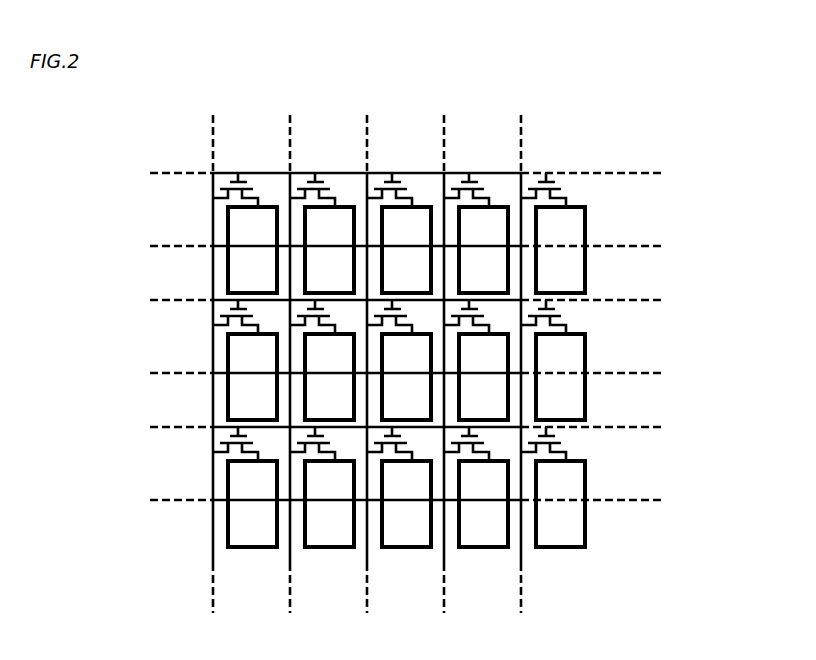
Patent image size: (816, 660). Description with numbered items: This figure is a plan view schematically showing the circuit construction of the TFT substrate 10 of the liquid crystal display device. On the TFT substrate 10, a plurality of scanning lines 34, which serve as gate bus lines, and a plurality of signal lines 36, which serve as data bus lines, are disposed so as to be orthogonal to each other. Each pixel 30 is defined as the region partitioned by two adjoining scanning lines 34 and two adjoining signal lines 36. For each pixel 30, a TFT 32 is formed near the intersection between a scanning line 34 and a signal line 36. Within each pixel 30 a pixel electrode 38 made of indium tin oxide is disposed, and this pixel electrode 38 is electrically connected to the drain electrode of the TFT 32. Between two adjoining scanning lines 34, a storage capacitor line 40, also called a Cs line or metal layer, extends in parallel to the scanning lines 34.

The TFT substrate 10 is at (419, 110).
The pixel 30 is at (617, 185).
The TFT 32 is at (570, 188).
The scanning line 34 is at (647, 173).
The signal line 36 is at (215, 142).
The pixel electrode 38 is at (570, 273).
The storage capacitor line 40 is at (647, 246).